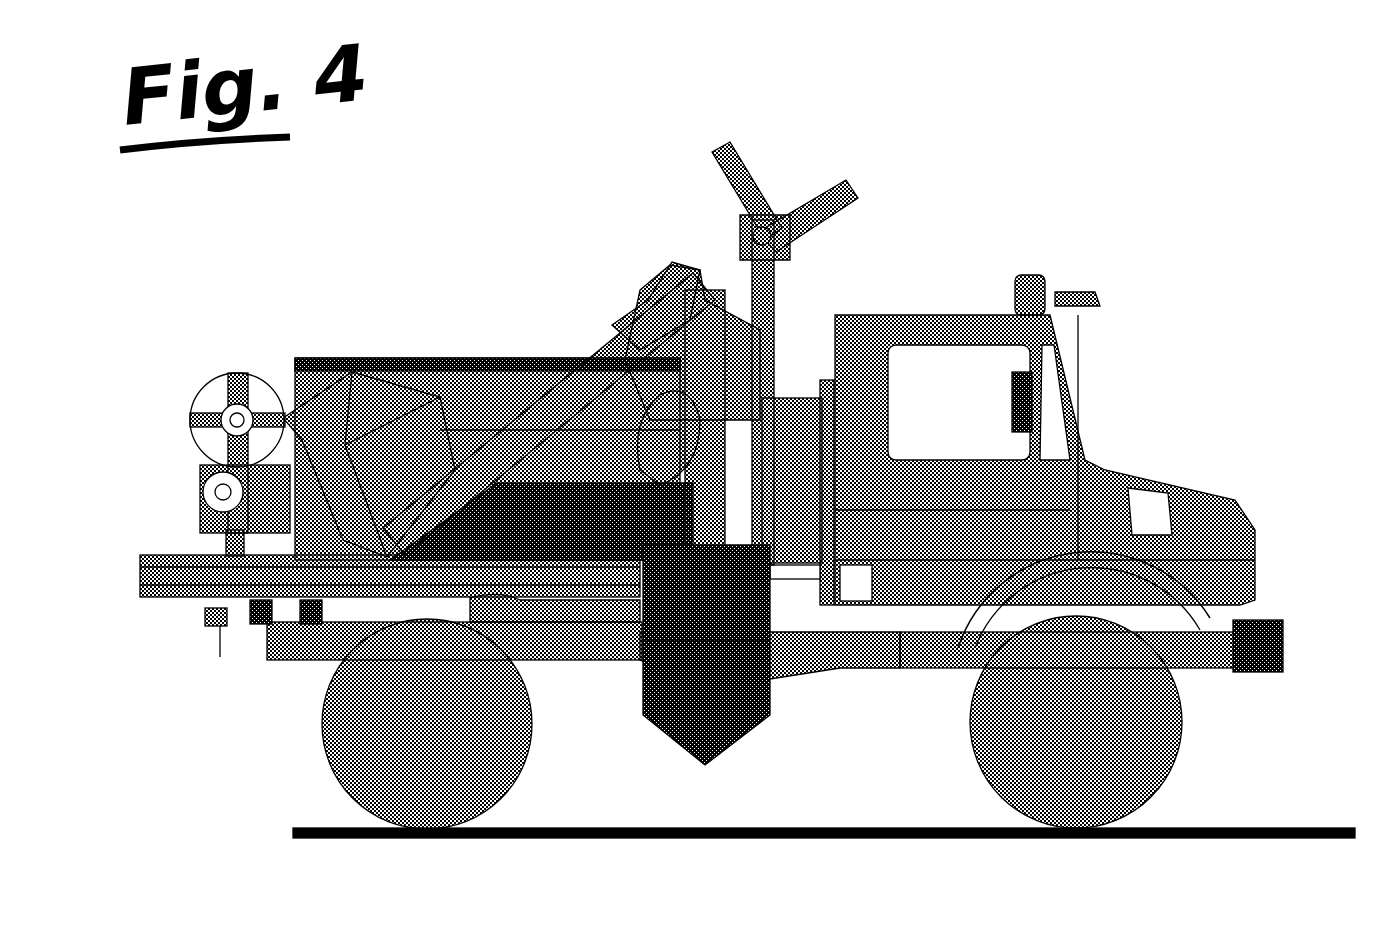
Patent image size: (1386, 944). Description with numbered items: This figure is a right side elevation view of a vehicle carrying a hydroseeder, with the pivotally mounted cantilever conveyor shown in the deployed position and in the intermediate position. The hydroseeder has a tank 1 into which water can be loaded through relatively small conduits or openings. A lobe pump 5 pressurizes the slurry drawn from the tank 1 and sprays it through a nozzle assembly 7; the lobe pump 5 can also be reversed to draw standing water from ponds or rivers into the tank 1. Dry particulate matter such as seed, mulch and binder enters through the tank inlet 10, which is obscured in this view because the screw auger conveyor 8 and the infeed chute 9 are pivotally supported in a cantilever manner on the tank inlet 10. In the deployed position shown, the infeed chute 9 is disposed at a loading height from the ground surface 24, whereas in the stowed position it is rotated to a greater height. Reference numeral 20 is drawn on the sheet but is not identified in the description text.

The tank 1 is at (500, 352).
The lobe pump 5 is at (207, 493).
The nozzle assembly 7 is at (858, 185).
The conveyor 8 is at (773, 385).
The infeed chute 9 is at (370, 355).
The tank inlet 10 is at (657, 423).
The actuator 20 is at (605, 347).
The ground surface 24 is at (1270, 826).